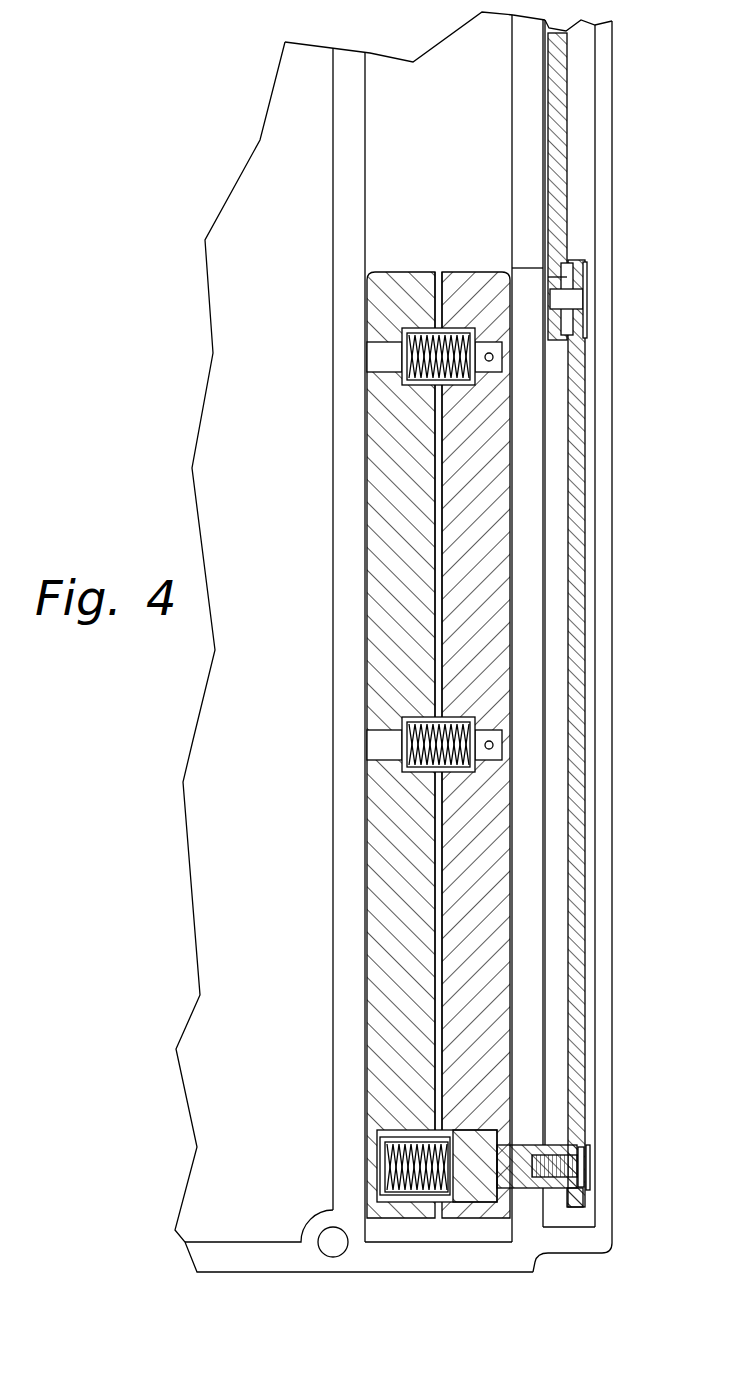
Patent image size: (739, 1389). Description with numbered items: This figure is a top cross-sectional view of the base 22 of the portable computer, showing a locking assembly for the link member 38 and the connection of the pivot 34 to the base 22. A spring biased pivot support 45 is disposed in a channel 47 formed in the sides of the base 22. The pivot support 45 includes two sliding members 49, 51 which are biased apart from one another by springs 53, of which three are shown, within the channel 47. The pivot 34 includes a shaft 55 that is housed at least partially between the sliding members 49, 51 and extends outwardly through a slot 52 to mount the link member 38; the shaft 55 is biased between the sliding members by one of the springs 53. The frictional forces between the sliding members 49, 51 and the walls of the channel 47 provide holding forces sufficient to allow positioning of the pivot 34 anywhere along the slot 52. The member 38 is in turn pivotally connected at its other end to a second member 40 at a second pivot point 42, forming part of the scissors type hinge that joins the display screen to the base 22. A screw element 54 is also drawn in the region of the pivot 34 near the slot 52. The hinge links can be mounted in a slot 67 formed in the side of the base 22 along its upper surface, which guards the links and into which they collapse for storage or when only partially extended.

The base 22 is at (247, 1274).
The pivot 34 is at (590, 1156).
The member 38 is at (596, 650).
The second member 40 is at (577, 193).
The second pivot point 42 is at (585, 302).
The spring biased pivot support 45 is at (439, 238).
The channel 47 is at (512, 133).
The sliding member 49 is at (394, 272).
The sliding member 51 is at (484, 272).
The slot 52 is at (533, 1198).
The spring 53 is at (410, 384).
The adjustment screw 54 is at (582, 1165).
The shaft 55 is at (478, 1228).
The slot 67 is at (590, 405).